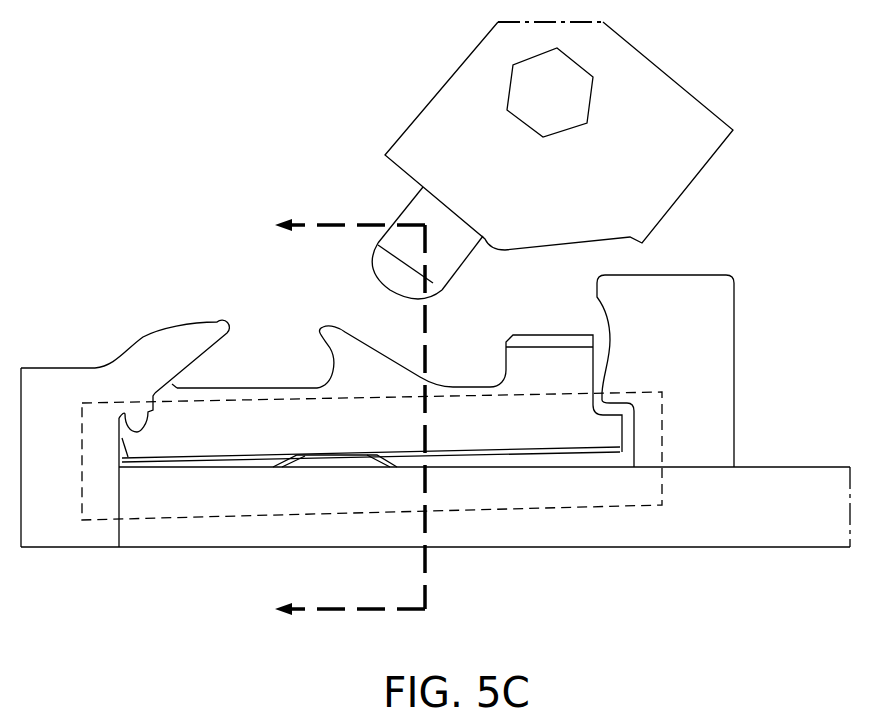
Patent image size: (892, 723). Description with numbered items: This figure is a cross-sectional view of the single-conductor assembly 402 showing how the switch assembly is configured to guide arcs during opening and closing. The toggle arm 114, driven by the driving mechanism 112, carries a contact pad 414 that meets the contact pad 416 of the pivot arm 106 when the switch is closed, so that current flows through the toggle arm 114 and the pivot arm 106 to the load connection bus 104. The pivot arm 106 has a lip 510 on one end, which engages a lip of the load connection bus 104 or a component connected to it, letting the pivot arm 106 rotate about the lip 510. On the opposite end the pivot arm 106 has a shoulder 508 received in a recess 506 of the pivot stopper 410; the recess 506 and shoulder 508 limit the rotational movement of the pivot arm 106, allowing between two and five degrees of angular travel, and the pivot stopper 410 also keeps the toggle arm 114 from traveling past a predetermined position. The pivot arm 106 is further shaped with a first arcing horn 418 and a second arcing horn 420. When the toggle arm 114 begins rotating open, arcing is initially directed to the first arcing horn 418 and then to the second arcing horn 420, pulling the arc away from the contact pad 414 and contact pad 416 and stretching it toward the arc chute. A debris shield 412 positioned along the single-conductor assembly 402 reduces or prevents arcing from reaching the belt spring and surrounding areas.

The single-conductor assembly 402 is at (138, 108).
The driving mechanism 112 is at (432, 125).
The toggle arm 114 is at (415, 210).
The contact pad 414 is at (375, 257).
The second arcing horn 420 is at (215, 335).
The lip 510 is at (137, 412).
The first arcing horn 418 is at (330, 338).
The contact pad 416 is at (533, 342).
The shoulder 508 is at (633, 423).
The pivot stopper 410 is at (715, 367).
The recess 506 is at (627, 397).
The debris shield 412 is at (132, 512).
The pivot arm 106 is at (222, 450).
The load connection bus 104 is at (805, 528).